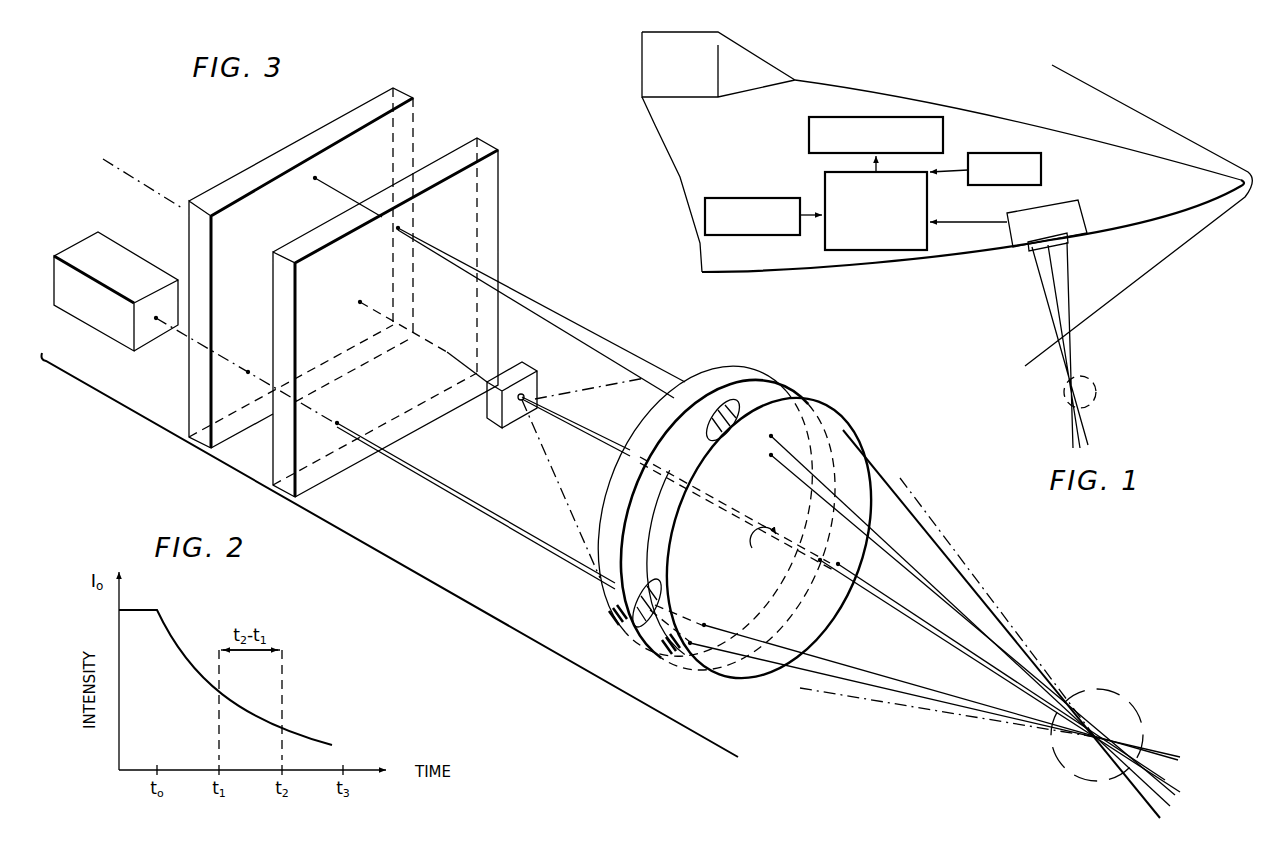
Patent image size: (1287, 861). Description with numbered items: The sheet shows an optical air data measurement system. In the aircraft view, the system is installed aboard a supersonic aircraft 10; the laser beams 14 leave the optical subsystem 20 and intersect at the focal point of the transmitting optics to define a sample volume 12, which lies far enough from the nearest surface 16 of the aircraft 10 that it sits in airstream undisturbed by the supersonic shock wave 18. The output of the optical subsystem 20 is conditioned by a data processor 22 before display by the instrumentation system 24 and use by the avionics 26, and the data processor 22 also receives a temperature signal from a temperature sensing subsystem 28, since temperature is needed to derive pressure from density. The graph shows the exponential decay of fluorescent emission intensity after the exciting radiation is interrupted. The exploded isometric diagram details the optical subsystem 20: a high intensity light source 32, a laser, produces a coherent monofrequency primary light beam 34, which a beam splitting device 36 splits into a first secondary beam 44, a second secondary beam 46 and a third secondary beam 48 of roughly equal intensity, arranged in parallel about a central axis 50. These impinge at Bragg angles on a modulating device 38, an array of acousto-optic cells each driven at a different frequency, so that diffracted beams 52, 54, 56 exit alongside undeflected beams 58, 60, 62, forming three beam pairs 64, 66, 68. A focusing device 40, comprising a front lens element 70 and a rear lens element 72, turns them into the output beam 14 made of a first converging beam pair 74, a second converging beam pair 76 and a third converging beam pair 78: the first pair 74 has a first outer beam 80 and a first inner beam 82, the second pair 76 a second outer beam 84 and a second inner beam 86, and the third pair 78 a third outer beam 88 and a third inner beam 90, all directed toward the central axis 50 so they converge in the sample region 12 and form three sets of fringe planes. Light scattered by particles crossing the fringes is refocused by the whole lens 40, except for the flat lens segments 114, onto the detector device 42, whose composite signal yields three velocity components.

In FIG. 1, the supersonic aircraft 10 is at (722, 172).
In FIG. 1, the sample volume 12 is at (1098, 393).
In FIG. 3, the sample volume 12 is at (1132, 716).
In FIG. 1, the laser beams 14 is at (1060, 297).
In FIG. 3, the laser beams 14 is at (1040, 679).
In FIG. 1, the nearest surface 16 is at (1136, 230).
In FIG. 1, the supersonic shock wave 18 is at (1137, 283).
In FIG. 1, the optical subsystem 20 is at (1087, 216).
In FIG. 3, the optical subsystem 20 is at (432, 578).
In FIG. 1, the data processor 22 is at (880, 250).
In FIG. 1, the instrumentation system 24 is at (895, 117).
In FIG. 1, the avionics 26 is at (762, 235).
In FIG. 1, the temperature sensing subsystem 28 is at (1015, 153).
In FIG. 3, the high intensity light source 32 is at (128, 252).
In FIG. 3, the primary light beam 34 is at (172, 330).
In FIG. 3, the beam splitting device 36 is at (413, 102).
In FIG. 3, the modulating device 38 is at (498, 150).
In FIG. 3, the focusing device 40 is at (793, 358).
In FIG. 3, the detector device 42 is at (487, 420).
In FIG. 3, the first secondary beam 44 is at (248, 372).
In FIG. 3, the second secondary beam 46 is at (350, 198).
In FIG. 3, the third secondary beam 48 is at (383, 317).
In FIG. 3, the central axis 50 is at (142, 182).
In FIG. 3, the first diffracted beam 52 is at (492, 514).
In FIG. 3, the second diffracted beam 54 is at (592, 343).
In FIG. 3, the third diffracted beam 56 is at (598, 447).
In FIG. 3, the first undeflected beam 58 is at (515, 530).
In FIG. 3, the second undeflected beam 60 is at (630, 368).
In FIG. 3, the third undeflected beam 62 is at (607, 447).
In FIG. 3, the first beam pair 64 is at (447, 490).
In FIG. 3, the second beam pair 66 is at (558, 314).
In FIG. 3, the third beam pair 68 is at (556, 424).
In FIG. 3, the front lens element 70 is at (696, 668).
In FIG. 3, the rear lens element 72 is at (626, 627).
In FIG. 3, the first converging beam pair 74 is at (942, 704).
In FIG. 3, the second converging beam pair 76 is at (994, 638).
In FIG. 3, the third converging beam pair 78 is at (952, 645).
In FIG. 3, the first outer beam 80 is at (800, 656).
In FIG. 3, the first inner beam 82 is at (850, 683).
In FIG. 3, the second outer beam 84 is at (880, 545).
In FIG. 3, the focused ray 86 is at (900, 567).
In FIG. 3, the third outer beam 88 is at (858, 587).
In FIG. 3, the third inner beam 90 is at (890, 603).
In FIG. 3, the flat lens segments 114 is at (728, 402).